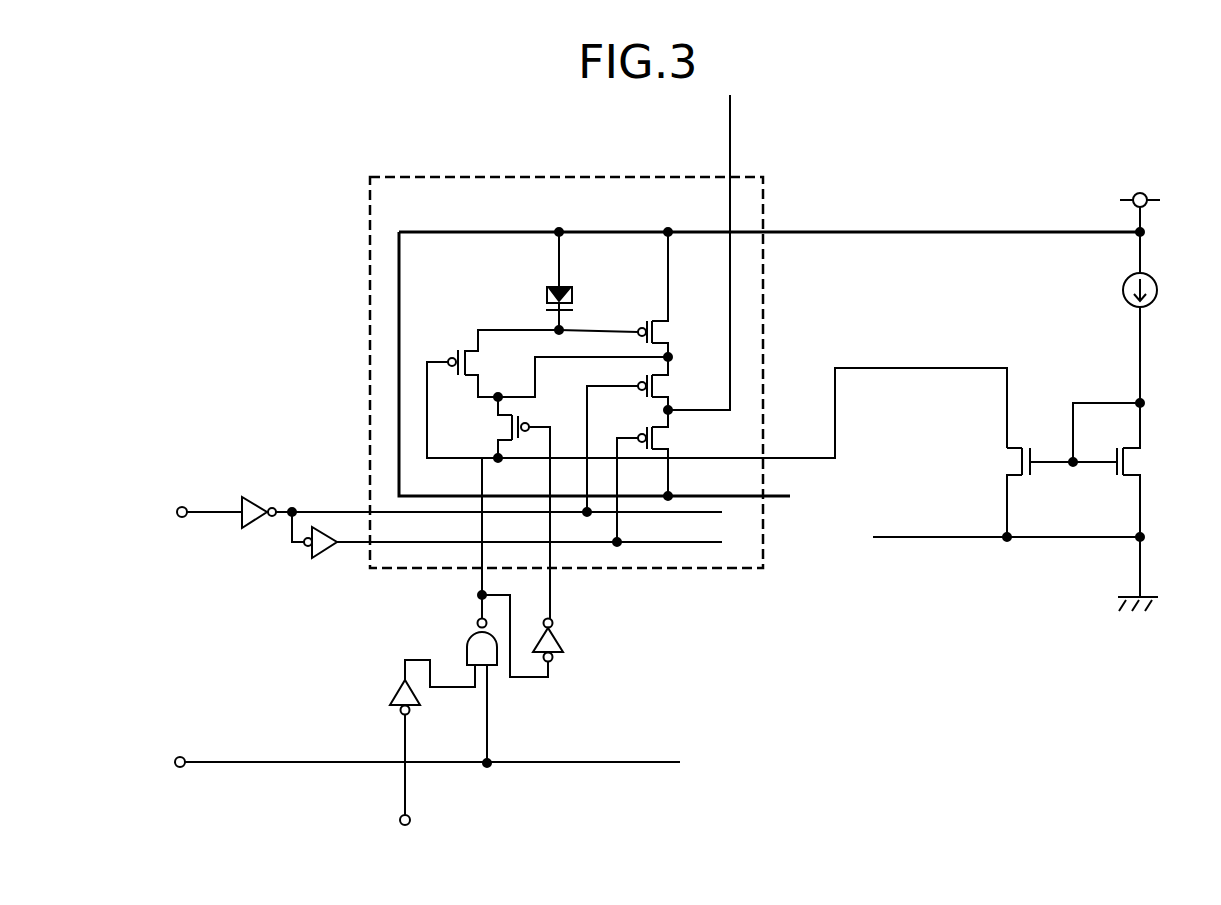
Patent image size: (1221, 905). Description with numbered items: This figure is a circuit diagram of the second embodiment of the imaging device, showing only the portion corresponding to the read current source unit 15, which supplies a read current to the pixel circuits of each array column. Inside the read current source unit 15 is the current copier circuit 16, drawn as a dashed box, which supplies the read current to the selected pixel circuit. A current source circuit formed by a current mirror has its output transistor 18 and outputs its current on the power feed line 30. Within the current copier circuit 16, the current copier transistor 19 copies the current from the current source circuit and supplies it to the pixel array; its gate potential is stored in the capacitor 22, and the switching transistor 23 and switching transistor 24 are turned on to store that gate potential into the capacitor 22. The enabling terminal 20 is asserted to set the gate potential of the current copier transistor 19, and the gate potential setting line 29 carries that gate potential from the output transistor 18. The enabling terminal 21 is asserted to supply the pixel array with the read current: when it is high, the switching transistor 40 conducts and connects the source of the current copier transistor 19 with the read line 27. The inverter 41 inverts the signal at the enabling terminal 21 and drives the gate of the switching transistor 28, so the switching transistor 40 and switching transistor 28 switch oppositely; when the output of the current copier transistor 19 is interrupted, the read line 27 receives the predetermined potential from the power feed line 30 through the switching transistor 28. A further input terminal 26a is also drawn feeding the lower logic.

The read current source unit 15 is at (935, 133).
The current copier circuit 16 is at (602, 175).
The output transistor 18 is at (1005, 463).
The current copier transistor 19 is at (668, 333).
The enabling terminal 20 is at (175, 763).
The enabling terminal 21 is at (178, 513).
The capacitor 22 is at (566, 286).
The switching transistor 23 is at (446, 355).
The switching transistor 24 is at (500, 431).
The input terminal 26a is at (412, 821).
The read line 27 is at (737, 131).
The switching transistor 28 is at (670, 439).
The gate potential setting line 29 is at (794, 457).
The power feed line 30 is at (841, 231).
The switching transistor 40 is at (670, 387).
The inverter 41 is at (331, 562).